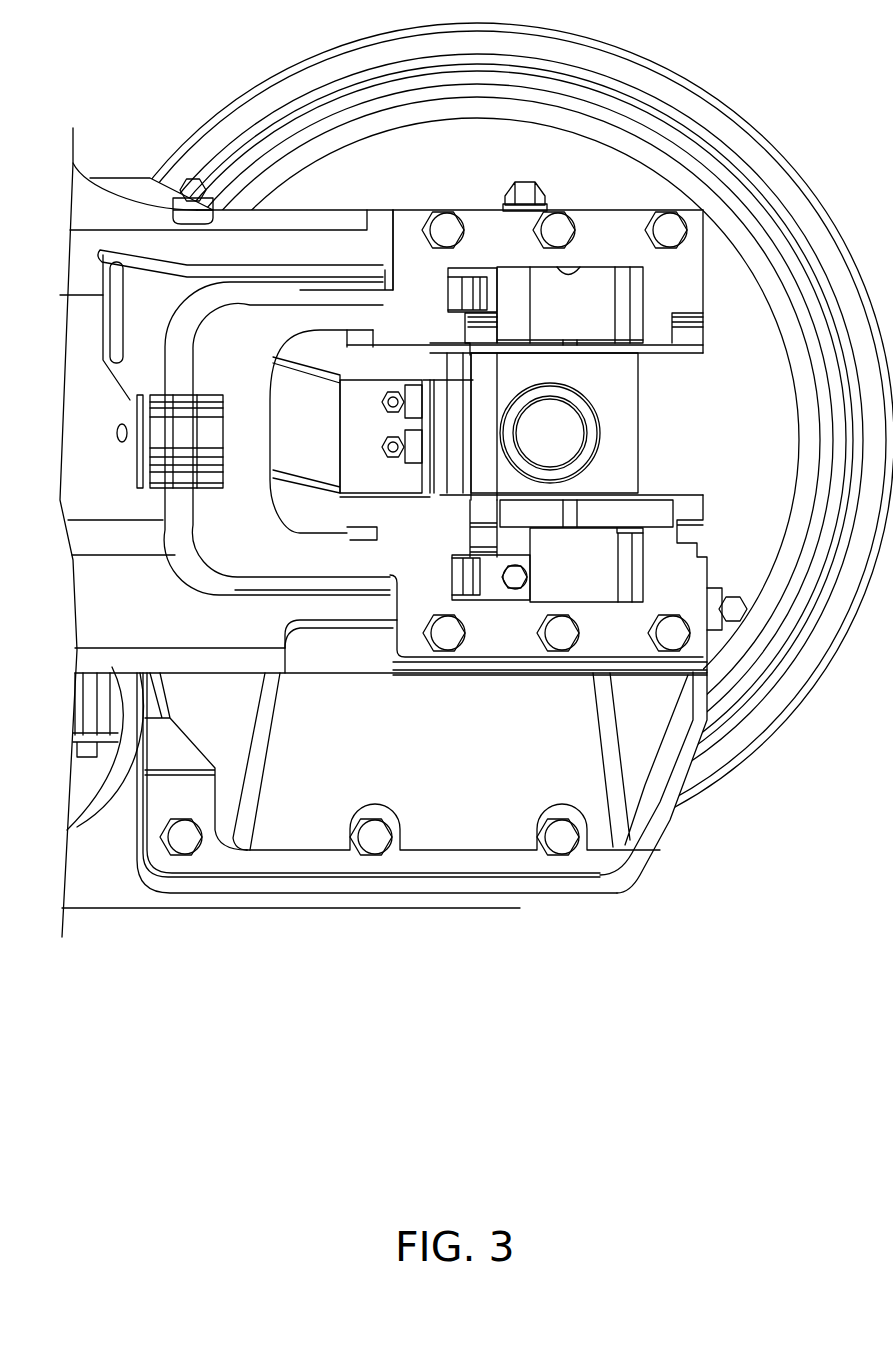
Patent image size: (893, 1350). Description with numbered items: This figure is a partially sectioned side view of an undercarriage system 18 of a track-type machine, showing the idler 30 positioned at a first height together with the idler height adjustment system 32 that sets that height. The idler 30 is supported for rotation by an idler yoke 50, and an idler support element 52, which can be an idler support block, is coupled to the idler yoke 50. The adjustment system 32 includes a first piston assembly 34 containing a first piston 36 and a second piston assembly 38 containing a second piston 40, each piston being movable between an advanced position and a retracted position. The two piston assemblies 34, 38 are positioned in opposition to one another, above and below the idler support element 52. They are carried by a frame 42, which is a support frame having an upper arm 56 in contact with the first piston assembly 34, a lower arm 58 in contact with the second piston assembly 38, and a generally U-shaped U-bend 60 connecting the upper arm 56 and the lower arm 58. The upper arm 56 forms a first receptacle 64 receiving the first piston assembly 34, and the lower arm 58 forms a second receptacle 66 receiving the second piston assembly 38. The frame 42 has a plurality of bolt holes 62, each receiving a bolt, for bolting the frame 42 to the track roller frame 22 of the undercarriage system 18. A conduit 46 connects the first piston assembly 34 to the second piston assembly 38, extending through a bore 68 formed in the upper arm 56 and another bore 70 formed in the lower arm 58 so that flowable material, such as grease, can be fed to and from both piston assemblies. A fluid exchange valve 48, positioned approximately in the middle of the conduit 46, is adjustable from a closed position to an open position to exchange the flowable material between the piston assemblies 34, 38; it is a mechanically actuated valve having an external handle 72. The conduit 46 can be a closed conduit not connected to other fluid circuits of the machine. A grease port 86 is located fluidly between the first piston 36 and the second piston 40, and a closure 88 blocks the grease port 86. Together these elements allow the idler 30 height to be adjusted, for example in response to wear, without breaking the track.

The undercarriage system 18 is at (748, 50).
The track roller frame 22 is at (92, 190).
The idler 30 is at (618, 62).
The idler height adjustment system 32 is at (715, 315).
The first piston assembly 34 is at (517, 280).
The first piston 36 is at (572, 340).
The second piston assembly 38 is at (597, 598).
The second piston 40 is at (597, 490).
The frame 42 is at (360, 565).
The conduit 46 is at (193, 568).
The fluid exchange valve 48 is at (163, 460).
The idler yoke 50 is at (325, 473).
The idler support element 52 is at (623, 380).
The upper arm 56 is at (487, 216).
The lower arm 58 is at (623, 645).
The U-bend 60 is at (168, 527).
The bolt holes 62 is at (415, 220).
The first receptacle 64 is at (568, 274).
The second receptacle 66 is at (613, 593).
The bore 68 is at (378, 272).
The bore 70 is at (380, 585).
The external handle 72 is at (117, 297).
The grease port 86 is at (523, 603).
The closure 88 is at (528, 572).